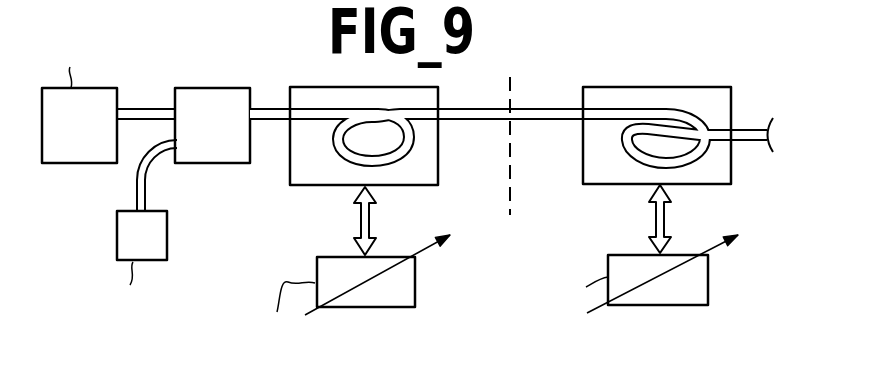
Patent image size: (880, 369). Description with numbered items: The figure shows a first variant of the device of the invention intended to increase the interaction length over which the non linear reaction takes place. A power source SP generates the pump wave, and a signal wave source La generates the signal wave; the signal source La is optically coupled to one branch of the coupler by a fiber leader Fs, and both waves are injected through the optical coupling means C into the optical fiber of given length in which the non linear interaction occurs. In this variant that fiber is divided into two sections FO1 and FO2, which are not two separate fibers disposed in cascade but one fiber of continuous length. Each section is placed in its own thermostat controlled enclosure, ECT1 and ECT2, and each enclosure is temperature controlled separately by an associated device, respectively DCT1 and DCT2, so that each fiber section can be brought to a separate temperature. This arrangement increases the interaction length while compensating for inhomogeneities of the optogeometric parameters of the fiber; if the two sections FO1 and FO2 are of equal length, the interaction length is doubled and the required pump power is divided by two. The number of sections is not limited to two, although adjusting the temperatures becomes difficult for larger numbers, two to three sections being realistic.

The power source SP is at (82, 164).
The optical coupling means C is at (200, 88).
The fiber leader Fs is at (146, 186).
The signal wave source La is at (167, 237).
The first fiber section FO1 is at (337, 108).
The second fiber section FO2 is at (645, 70).
The first thermostat controlled enclosure ECT1 is at (309, 185).
The second thermostat controlled enclosure ECT2 is at (614, 184).
The first temperature control device DCT1 is at (393, 308).
The second temperature control device DCT2 is at (686, 306).